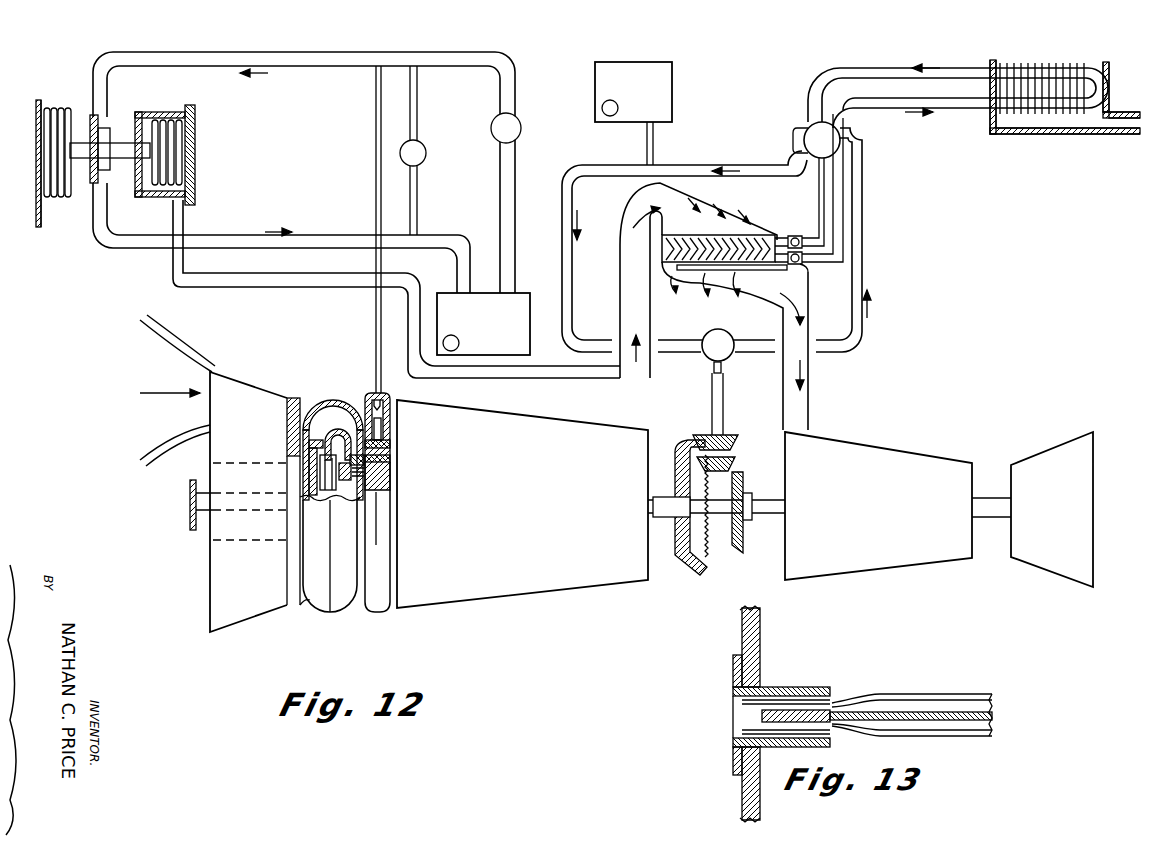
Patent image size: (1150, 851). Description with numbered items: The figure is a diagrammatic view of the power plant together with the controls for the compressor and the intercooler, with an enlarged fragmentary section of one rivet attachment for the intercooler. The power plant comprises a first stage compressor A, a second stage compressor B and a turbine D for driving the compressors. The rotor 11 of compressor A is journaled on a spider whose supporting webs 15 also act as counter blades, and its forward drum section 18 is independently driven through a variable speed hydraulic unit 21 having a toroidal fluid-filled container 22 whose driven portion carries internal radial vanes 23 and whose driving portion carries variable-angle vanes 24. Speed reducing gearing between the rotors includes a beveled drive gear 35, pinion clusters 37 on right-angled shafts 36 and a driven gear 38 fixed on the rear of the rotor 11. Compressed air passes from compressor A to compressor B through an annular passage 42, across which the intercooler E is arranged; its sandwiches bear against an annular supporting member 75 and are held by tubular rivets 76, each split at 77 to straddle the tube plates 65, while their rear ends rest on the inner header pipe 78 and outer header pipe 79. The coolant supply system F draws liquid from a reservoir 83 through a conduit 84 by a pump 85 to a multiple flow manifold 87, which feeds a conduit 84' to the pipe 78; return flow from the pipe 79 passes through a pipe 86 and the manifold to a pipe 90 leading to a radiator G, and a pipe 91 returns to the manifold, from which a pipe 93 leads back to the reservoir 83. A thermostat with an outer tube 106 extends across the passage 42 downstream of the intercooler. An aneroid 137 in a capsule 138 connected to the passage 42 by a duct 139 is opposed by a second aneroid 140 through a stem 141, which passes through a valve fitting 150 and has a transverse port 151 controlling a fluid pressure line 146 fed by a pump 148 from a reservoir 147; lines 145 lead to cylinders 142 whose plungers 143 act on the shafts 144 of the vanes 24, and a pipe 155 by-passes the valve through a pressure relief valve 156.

In FIG. 12, the rotor 11 is at (540, 516).
In FIG. 12, the supporting webs 15 is at (402, 380).
In FIG. 12, the drum section 18 is at (243, 622).
In FIG. 12, the variable speed hydraulic unit 21 is at (315, 607).
In FIG. 12, the toroidal fluid-filled container 22 is at (332, 398).
In FIG. 12, the internal radial vanes 23 is at (302, 445).
In FIG. 12, the variable-angle vanes 24 is at (363, 453).
In FIG. 12, the beveled drive gear 35 is at (743, 538).
In FIG. 12, the right-angled shafts 36 is at (710, 370).
In FIG. 12, the pinion clusters 37 is at (738, 462).
In FIG. 12, the driven gear 38 is at (682, 498).
In FIG. 12, the annular passage 42 is at (620, 300).
In FIG. 13, the tube plates 65 is at (840, 708).
In FIG. 13, the annular supporting member 75 is at (760, 648).
In FIG. 13, the tubular rivet 76 is at (767, 688).
In FIG. 13, the split 77 is at (797, 718).
In FIG. 12, the inner header pipe 78 is at (798, 253).
In FIG. 12, the outer header pipe 79 is at (795, 237).
In FIG. 12, the reservoir 83 is at (663, 93).
In FIG. 12, the conduit 84 is at (697, 240).
In FIG. 12, the conduit 84' is at (853, 199).
In FIG. 12, the pump 85 is at (727, 362).
In FIG. 12, the pipe 86 is at (830, 217).
In FIG. 12, the multiple flow manifold 87 is at (846, 122).
In FIG. 12, the pipe 90 is at (958, 104).
In FIG. 12, the pipe 91 is at (828, 74).
In FIG. 12, the pipe 93 is at (692, 168).
In FIG. 12, the outer tube 106 is at (792, 270).
In FIG. 12, the aneroid 137 is at (172, 125).
In FIG. 12, the capsule 138 is at (147, 112).
In FIG. 12, the duct 139 is at (212, 287).
In FIG. 12, the second aneroid 140 is at (63, 110).
In FIG. 12, the stem 141 is at (122, 162).
In FIG. 12, the cylinder 142 is at (393, 398).
In FIG. 12, the plunger 143 is at (388, 425).
In FIG. 12, the shaft 144 is at (388, 445).
In FIG. 12, the lines 145 is at (377, 317).
In FIG. 12, the fluid pressure line 146 is at (305, 68).
In FIG. 12, the reservoir 147 is at (505, 329).
In FIG. 12, the pump 148 is at (518, 133).
In FIG. 12, the valve fitting 150 is at (92, 165).
In FIG. 12, the transverse port 151 is at (88, 147).
In FIG. 12, the pipe 155 is at (413, 210).
In FIG. 12, the pressure relief valve 156 is at (428, 158).
In FIG. 12, the first stage compressor A is at (520, 604).
In FIG. 12, the second stage compressor B is at (850, 576).
In FIG. 12, the turbine D is at (1045, 578).
In FIG. 12, the intercooler E is at (752, 233).
In FIG. 12, the coolant supply system F is at (750, 160).
In FIG. 12, the radiator G is at (1033, 125).